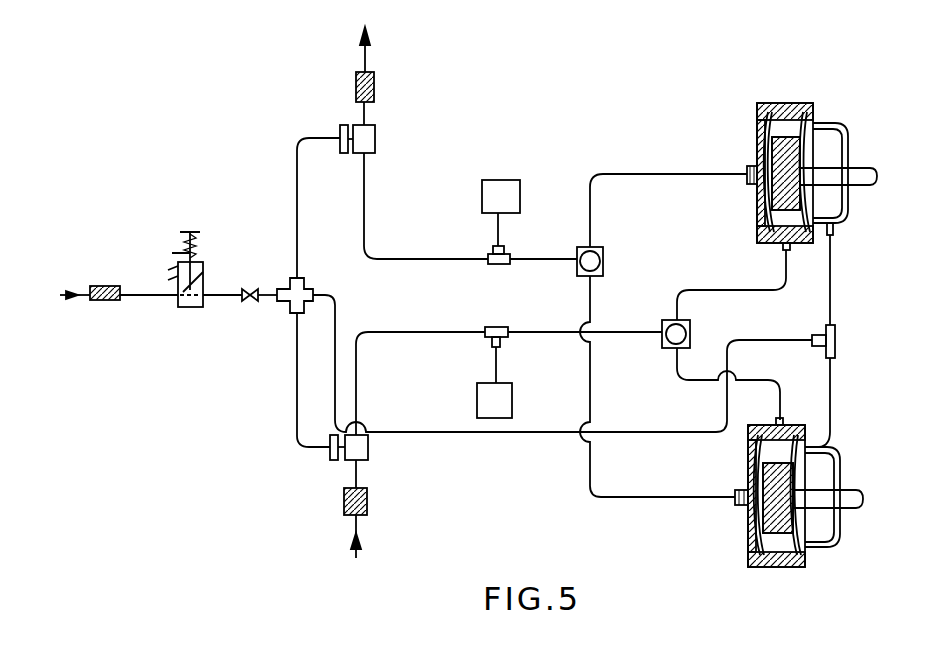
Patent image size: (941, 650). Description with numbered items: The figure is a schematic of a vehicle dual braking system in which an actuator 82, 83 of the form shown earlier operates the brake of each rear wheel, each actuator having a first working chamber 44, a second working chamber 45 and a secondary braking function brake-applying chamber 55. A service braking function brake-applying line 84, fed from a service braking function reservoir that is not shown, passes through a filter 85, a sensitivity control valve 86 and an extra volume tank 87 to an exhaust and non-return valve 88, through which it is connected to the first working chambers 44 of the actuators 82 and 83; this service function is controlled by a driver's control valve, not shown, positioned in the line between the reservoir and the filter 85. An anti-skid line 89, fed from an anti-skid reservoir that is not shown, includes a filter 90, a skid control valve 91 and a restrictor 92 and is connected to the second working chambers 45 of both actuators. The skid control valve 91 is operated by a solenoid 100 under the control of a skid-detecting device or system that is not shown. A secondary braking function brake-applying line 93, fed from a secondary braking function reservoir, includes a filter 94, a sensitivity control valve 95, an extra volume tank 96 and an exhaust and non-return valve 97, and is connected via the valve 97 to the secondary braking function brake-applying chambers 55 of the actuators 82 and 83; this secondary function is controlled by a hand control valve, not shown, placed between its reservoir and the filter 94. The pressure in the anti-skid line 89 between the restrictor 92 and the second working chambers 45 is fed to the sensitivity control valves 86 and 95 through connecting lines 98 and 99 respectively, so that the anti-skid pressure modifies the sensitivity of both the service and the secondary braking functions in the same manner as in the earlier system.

The first working chamber 44 is at (790, 130).
The second working chamber 45 is at (830, 153).
The secondary braking function brake-applying chamber 55 is at (762, 128).
The actuator 82 is at (807, 335).
The actuator 83 is at (822, 528).
The service braking function brake-applying line 84 is at (430, 332).
The filter 85 is at (367, 503).
The sensitivity control valve 86 is at (368, 448).
The extra volume tank 87 is at (500, 402).
The exhaust and non-return valve 88 is at (689, 324).
The anti-skid line 89 is at (338, 327).
The filter 90 is at (118, 250).
The skid control valve 91 is at (187, 308).
The restrictor 92 is at (244, 302).
The secondary braking function brake-applying line 93 is at (460, 257).
The filter 94 is at (357, 85).
The sensitivity control valve 95 is at (374, 140).
The extra volume tank 96 is at (496, 265).
The exhaust and non-return valve 97 is at (603, 250).
The line 98 is at (295, 382).
The line 99 is at (298, 178).
The solenoid 100 is at (200, 246).